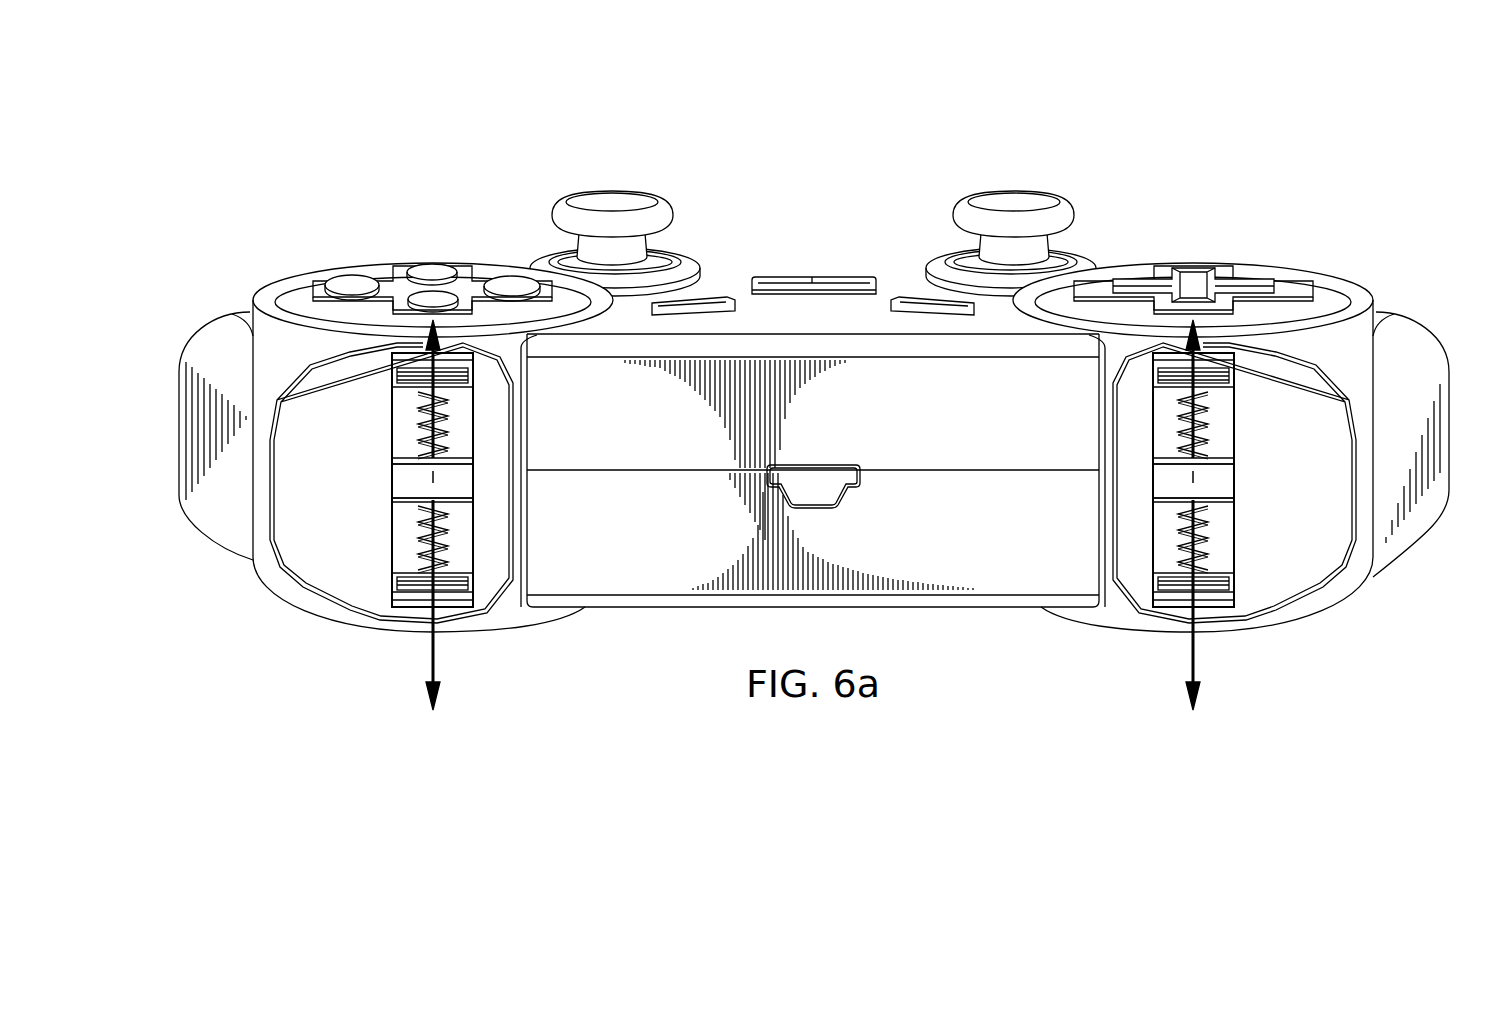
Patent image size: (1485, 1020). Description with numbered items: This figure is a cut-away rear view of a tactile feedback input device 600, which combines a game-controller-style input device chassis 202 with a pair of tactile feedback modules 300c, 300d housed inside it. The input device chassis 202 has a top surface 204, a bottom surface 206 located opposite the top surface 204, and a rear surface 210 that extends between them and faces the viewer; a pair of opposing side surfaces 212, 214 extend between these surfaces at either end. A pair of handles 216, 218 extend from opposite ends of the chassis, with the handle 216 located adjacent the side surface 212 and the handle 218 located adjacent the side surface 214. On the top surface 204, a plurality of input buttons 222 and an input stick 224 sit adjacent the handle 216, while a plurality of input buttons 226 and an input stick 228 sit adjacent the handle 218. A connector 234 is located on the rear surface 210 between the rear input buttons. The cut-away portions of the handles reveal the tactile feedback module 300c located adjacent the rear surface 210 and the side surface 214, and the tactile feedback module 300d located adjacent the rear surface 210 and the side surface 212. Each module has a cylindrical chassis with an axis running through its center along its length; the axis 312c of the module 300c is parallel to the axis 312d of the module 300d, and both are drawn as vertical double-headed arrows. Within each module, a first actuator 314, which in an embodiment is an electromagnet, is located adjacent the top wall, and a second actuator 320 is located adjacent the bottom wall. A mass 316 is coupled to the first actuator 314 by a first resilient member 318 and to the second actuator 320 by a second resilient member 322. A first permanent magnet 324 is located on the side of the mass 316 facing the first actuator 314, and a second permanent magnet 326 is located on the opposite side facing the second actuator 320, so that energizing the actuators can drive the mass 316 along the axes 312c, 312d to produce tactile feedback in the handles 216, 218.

The tactile feedback input device 600 is at (813, 390).
The input device chassis 202 is at (1348, 276).
The top surface 204 is at (733, 290).
The bottom surface 206 is at (970, 612).
The rear surface 210 is at (658, 580).
The side surface 212 is at (1373, 558).
The side surface 214 is at (253, 558).
The handle 216 is at (1405, 320).
The handle 218 is at (210, 322).
The input buttons 222 is at (1192, 267).
The input stick 224 is at (1053, 201).
The input buttons 226 is at (351, 274).
The input stick 228 is at (573, 201).
The connector 234 is at (833, 465).
The tactile feedback module 300c is at (486, 408).
The tactile feedback module 300d is at (1140, 408).
The axis 312c is at (430, 667).
The axis 312d is at (1198, 666).
The first actuator 314 is at (400, 394).
The mass 316 is at (398, 482).
The first resilient member 318 is at (448, 434).
The second actuator 320 is at (398, 570).
The second resilient member 322 is at (452, 546).
The first permanent magnet 324 is at (398, 457).
The second permanent magnet 326 is at (398, 512).